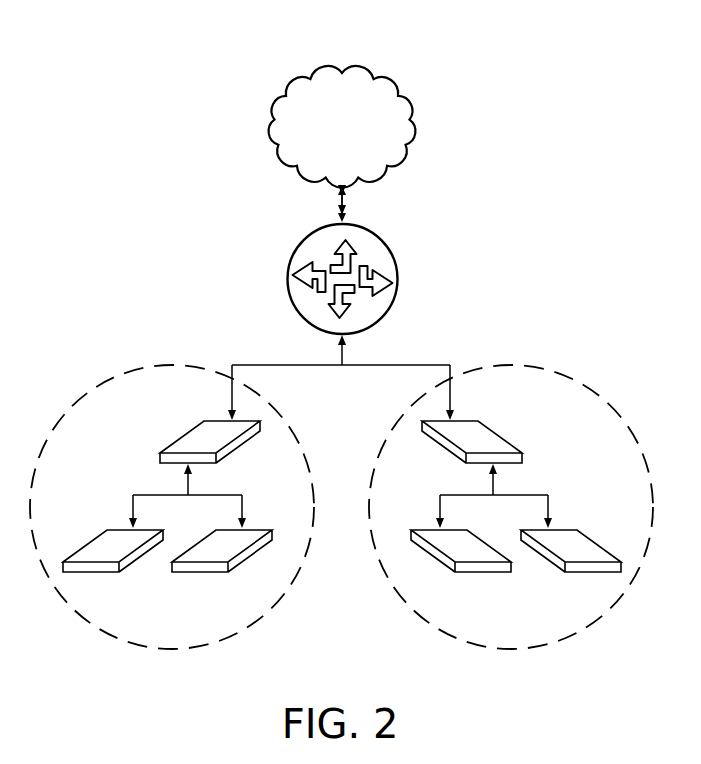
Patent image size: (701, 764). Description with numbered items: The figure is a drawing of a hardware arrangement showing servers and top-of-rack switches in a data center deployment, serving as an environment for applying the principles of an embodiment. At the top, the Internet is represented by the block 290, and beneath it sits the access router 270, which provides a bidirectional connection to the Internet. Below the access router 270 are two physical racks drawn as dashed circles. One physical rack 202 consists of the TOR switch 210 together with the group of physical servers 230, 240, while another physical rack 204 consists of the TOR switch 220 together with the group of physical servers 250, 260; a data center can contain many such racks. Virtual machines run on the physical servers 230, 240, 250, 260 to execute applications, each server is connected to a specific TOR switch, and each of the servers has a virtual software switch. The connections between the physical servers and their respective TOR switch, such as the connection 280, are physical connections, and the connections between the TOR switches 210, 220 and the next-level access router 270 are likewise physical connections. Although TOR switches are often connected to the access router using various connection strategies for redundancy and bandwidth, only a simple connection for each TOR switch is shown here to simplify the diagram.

The Internet 290 is at (318, 70).
The access router 270 is at (287, 278).
The physical rack 202 is at (165, 649).
The physical rack 204 is at (533, 651).
The TOR switch 210 is at (183, 434).
The TOR switch 220 is at (500, 434).
The physical server 230 is at (92, 537).
The physical server 240 is at (200, 573).
The physical server 250 is at (483, 573).
The physical server 260 is at (590, 538).
The connection 280 is at (240, 495).